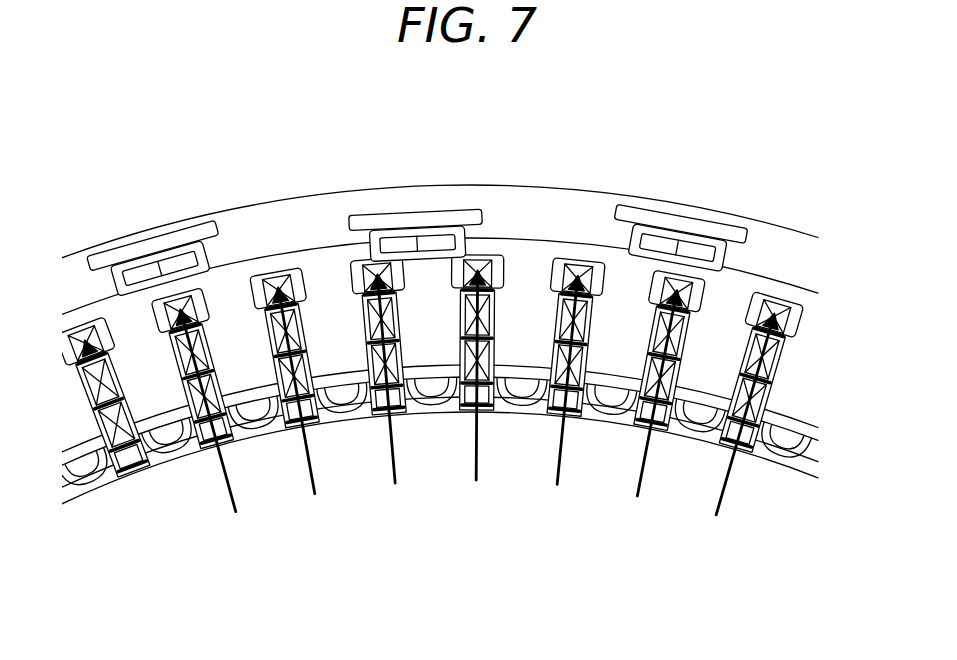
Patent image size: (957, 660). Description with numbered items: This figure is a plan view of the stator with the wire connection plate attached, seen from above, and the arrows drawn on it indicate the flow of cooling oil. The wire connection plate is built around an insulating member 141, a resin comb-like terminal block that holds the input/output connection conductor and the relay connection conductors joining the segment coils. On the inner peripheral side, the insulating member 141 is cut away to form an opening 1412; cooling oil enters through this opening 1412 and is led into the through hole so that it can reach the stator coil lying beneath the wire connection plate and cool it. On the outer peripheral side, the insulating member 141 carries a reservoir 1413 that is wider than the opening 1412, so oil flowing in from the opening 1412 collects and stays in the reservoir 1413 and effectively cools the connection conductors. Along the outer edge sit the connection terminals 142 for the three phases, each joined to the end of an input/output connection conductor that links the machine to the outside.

The insulating member 141 is at (541, 186).
The opening 1412 is at (385, 412).
The reservoir 1413 is at (263, 268).
The connection terminal 142 is at (428, 216).